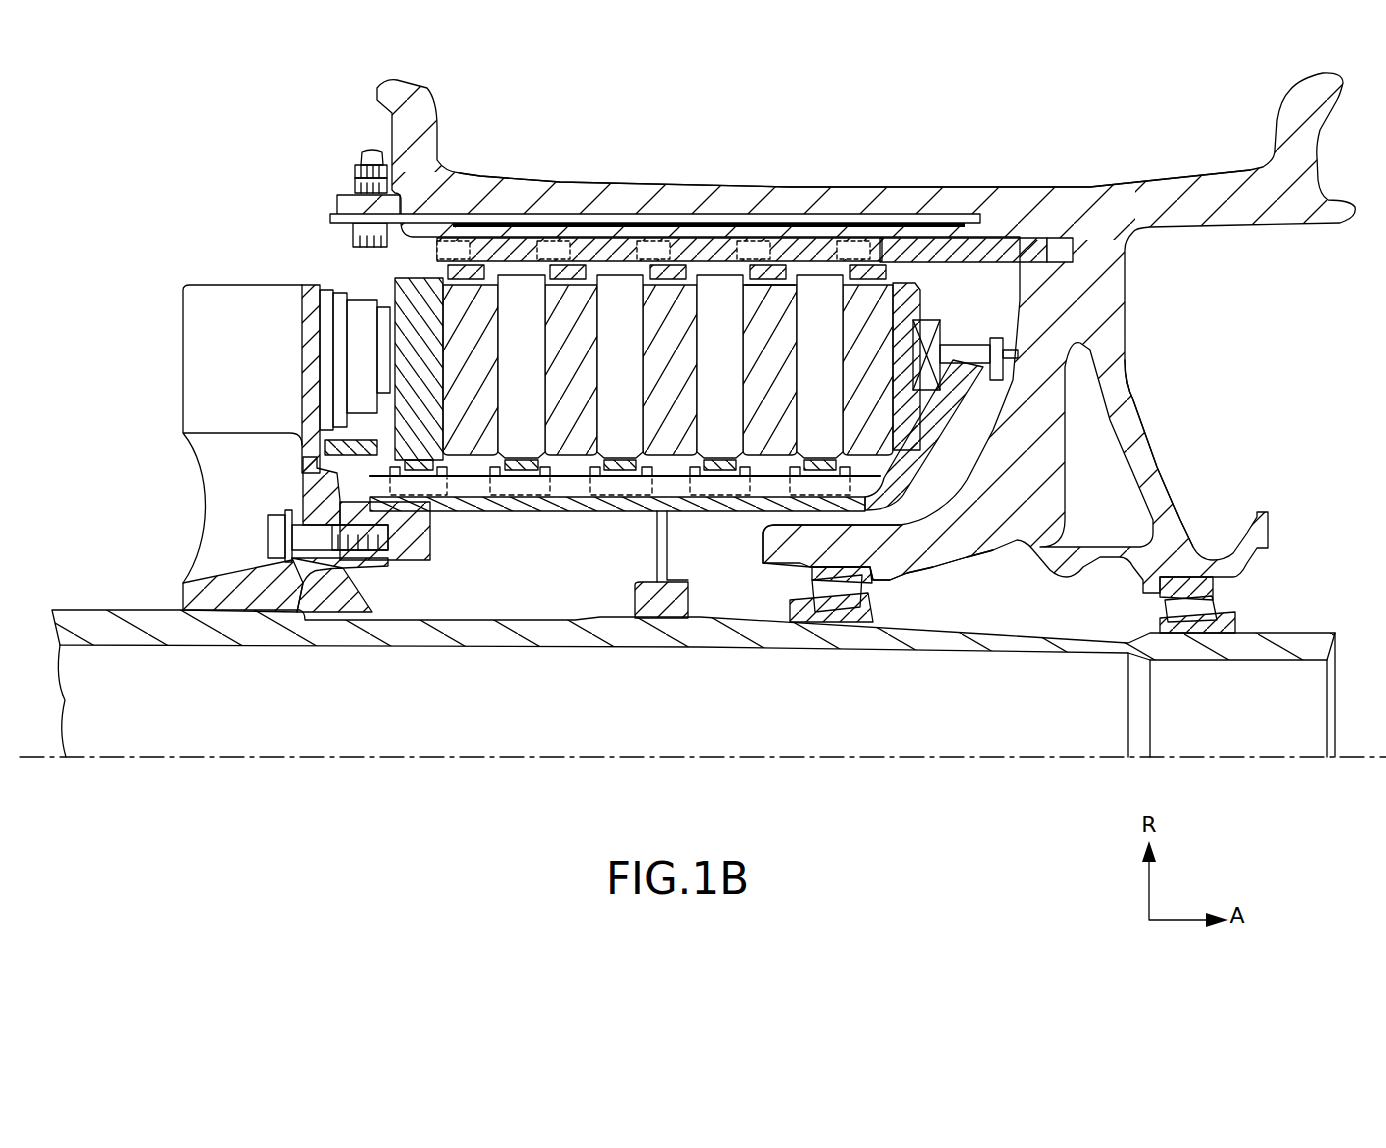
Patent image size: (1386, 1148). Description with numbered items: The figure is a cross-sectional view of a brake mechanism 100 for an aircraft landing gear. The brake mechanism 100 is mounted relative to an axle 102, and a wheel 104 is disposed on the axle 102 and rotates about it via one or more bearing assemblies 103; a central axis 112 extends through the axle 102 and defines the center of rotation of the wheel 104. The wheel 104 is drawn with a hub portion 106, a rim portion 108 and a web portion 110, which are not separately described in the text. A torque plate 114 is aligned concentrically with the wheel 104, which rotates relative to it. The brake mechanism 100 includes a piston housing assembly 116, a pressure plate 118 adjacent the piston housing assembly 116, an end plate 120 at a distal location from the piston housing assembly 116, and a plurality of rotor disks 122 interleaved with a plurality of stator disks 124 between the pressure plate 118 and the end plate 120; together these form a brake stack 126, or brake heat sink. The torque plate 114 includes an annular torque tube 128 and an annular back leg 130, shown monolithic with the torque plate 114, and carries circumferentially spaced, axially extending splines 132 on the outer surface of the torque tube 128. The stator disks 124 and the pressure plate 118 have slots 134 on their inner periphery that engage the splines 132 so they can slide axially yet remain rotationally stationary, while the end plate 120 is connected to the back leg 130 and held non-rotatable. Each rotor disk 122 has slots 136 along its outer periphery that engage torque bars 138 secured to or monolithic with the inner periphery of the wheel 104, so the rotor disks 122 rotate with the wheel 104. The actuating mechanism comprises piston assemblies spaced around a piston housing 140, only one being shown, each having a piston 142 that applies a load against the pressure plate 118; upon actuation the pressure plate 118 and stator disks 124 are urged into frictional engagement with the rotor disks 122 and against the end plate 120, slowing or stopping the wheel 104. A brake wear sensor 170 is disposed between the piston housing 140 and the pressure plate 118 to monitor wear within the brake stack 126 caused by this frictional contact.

The brake mechanism 100 is at (172, 142).
The axle 102 is at (992, 650).
The bearing assemblies 103 is at (1203, 612).
The wheel 104 is at (1164, 342).
The hub 106 is at (963, 558).
The rim 108 is at (1012, 187).
The arm 110 is at (1148, 420).
The central axis 112 is at (943, 762).
The torque plate 114 is at (498, 527).
The piston housing assembly 116 is at (256, 256).
The pressure plate 118 is at (395, 283).
The end plate 120 is at (920, 290).
The rotor disks 122 is at (473, 295).
The stator disks 124 is at (620, 290).
The brake stack 126 is at (780, 298).
The torque tube 128 is at (452, 512).
The back leg 130 is at (938, 430).
The splines 132 is at (570, 487).
The slots 134 is at (800, 493).
The slots 136 is at (550, 280).
The torque bars 138 is at (930, 250).
The piston housing 140 is at (182, 289).
The piston 142 is at (390, 338).
The brake wear sensor 170 is at (345, 452).